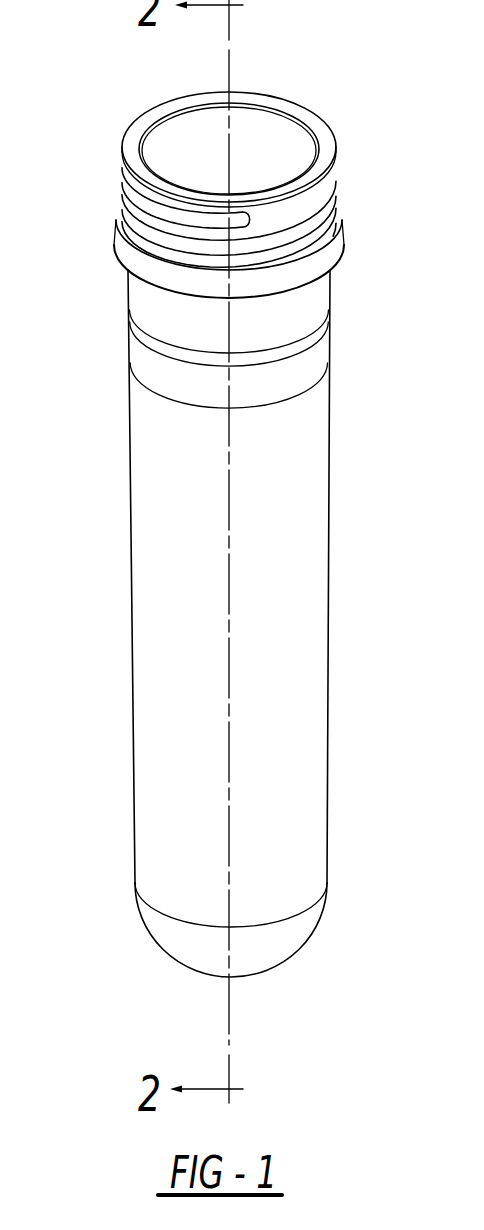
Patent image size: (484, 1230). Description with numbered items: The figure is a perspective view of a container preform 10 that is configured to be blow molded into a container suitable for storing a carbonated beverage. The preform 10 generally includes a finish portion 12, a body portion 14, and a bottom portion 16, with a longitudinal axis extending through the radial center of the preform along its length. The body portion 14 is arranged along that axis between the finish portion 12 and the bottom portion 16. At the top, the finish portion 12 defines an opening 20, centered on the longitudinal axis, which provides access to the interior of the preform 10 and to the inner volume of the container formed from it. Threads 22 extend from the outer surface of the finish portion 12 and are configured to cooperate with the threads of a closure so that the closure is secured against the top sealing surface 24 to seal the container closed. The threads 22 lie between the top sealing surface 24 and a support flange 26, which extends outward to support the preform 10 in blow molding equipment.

The preform 10 is at (112, 52).
The finish portion 12 is at (305, 191).
The body portion 14 is at (163, 600).
The bottom portion 16 is at (190, 938).
The opening 20 is at (262, 138).
The threads 22 is at (118, 162).
The top sealing surface 24 is at (155, 116).
The support flange 26 is at (125, 247).